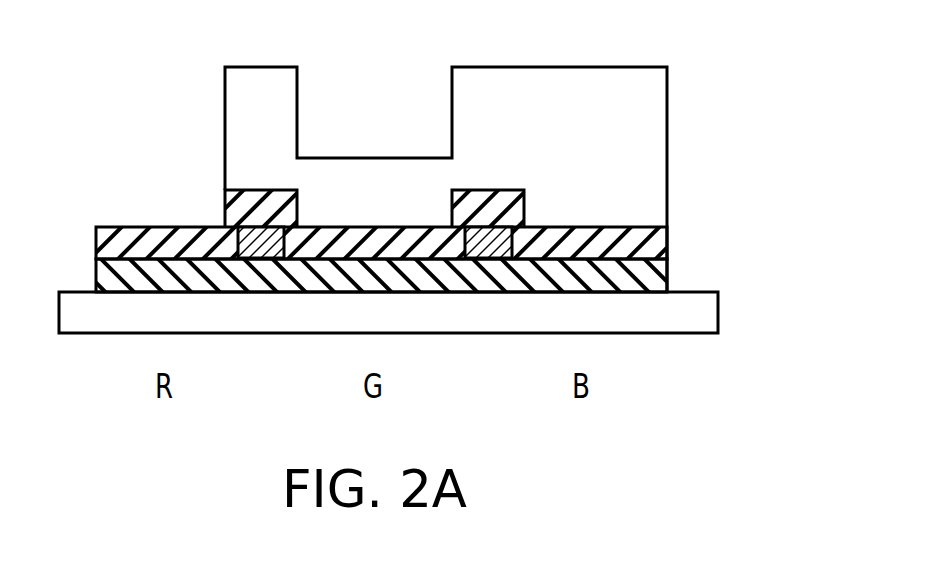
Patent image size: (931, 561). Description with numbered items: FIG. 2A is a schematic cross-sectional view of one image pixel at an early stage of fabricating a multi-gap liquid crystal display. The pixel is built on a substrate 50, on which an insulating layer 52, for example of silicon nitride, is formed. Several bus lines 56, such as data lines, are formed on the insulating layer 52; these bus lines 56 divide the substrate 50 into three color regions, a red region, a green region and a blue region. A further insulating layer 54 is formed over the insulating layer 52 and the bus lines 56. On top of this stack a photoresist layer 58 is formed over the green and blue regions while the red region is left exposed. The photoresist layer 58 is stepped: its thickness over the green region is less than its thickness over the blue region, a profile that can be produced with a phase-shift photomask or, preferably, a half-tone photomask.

The substrate 50 is at (697, 315).
The insulating layer 52 is at (647, 273).
The insulating layer 54 is at (650, 240).
The bus lines 56 is at (525, 225).
The photoresist layer 58 is at (610, 82).